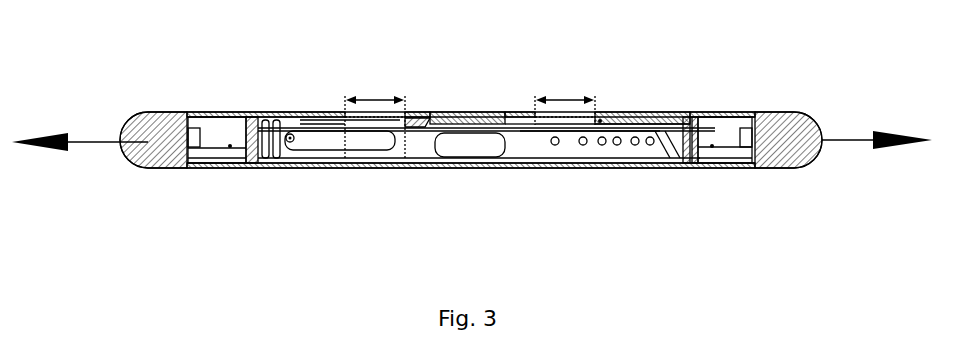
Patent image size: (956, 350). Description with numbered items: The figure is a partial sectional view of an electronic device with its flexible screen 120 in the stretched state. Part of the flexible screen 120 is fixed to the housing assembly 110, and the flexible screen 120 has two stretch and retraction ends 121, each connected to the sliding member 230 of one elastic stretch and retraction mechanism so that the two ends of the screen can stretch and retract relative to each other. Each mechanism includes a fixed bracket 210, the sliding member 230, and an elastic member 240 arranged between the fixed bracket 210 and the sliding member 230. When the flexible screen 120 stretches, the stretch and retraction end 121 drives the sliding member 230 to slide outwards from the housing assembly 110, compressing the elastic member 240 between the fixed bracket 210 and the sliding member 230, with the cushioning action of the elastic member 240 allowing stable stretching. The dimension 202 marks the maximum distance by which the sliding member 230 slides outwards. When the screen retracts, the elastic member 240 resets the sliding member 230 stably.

The housing assembly 110 is at (208, 115).
The flexible screen 120 is at (136, 115).
The stretch and retraction end 121 is at (324, 113).
The maximum distance by which the sliding member slides outwards 202 is at (563, 99).
The fixed bracket 210 is at (262, 165).
The sliding member 230 is at (405, 150).
The elastic member 240 is at (345, 160).